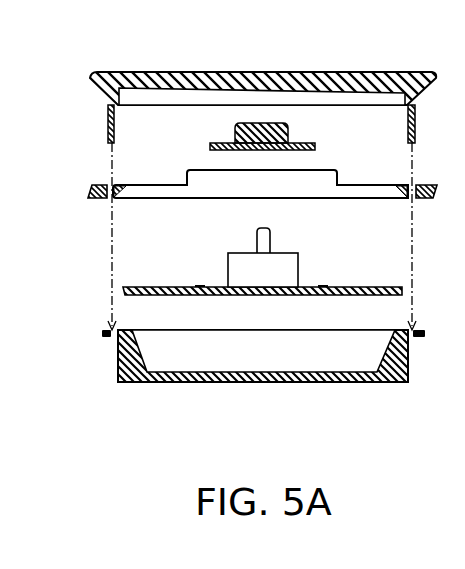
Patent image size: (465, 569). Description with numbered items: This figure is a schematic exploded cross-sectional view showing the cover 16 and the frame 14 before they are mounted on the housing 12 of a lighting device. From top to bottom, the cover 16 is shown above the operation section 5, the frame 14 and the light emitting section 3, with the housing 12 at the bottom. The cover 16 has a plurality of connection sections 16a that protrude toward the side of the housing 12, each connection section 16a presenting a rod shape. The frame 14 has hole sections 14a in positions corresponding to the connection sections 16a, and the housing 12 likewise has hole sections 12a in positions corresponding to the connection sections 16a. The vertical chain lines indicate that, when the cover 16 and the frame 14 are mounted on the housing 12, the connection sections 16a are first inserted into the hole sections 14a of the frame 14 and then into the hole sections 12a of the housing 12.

The cover 16 is at (265, 70).
The connection section 16a is at (108, 126).
The operation section 5 is at (288, 131).
The frame 14 is at (98, 207).
The hole section 14a is at (104, 182).
The light emitting section 3 is at (365, 276).
The housing 12 is at (146, 391).
The hole section 12a is at (107, 344).